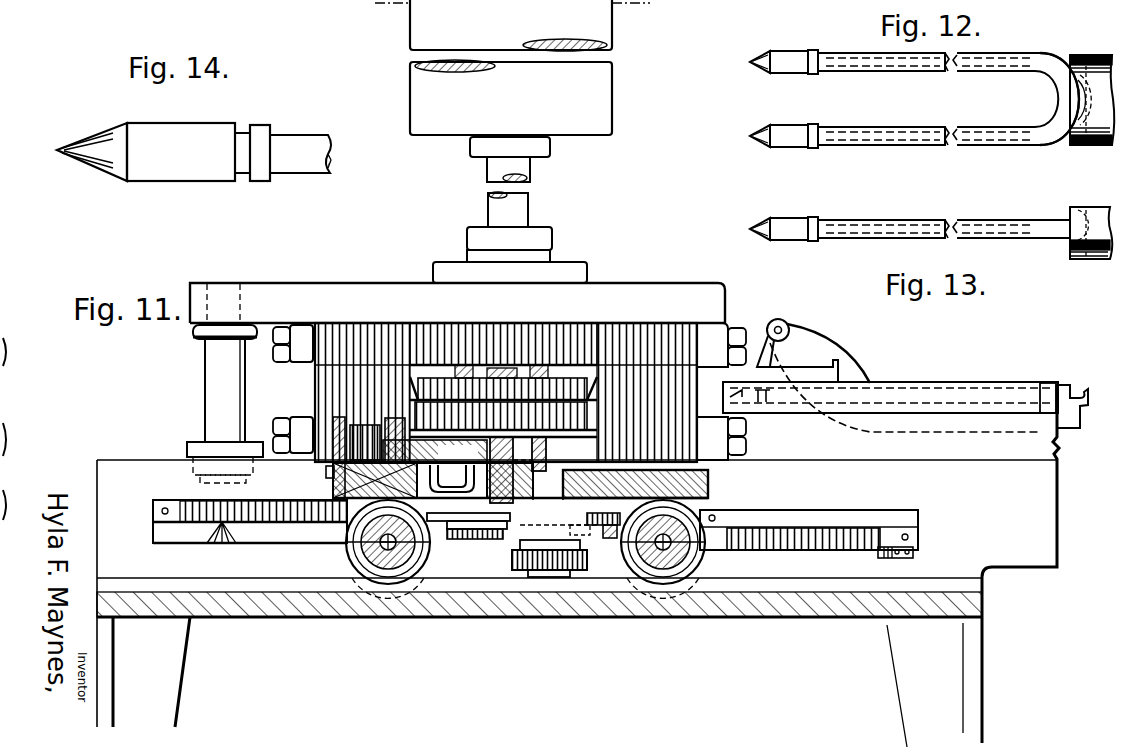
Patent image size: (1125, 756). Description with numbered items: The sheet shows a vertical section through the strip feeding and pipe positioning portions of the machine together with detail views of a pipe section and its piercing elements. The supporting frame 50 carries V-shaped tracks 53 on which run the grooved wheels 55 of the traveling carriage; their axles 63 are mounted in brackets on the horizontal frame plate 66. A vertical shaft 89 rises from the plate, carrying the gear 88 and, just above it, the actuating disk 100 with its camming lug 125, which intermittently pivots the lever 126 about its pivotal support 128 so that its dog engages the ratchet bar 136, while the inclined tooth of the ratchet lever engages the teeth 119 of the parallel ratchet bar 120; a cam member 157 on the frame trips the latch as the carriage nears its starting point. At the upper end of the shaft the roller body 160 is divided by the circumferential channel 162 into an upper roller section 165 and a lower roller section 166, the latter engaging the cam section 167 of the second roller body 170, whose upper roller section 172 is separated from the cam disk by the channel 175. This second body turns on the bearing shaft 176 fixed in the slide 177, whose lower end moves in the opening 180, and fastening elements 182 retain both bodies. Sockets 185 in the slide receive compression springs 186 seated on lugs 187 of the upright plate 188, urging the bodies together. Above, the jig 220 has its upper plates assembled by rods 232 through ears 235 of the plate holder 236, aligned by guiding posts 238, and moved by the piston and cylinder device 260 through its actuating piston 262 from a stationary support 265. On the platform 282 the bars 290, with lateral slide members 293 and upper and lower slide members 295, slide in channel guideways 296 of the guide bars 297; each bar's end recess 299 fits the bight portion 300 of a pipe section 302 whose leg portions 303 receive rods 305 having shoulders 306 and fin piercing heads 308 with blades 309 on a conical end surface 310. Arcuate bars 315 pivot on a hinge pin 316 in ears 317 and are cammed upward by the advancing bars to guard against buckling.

In FIG. 11, the supporting frame 50 is at (89, 469).
In FIG. 11, the rails or tracks 53 is at (128, 580).
In FIG. 11, the wheels or rollers 55 is at (370, 583).
In FIG. 11, the axles 63 is at (391, 550).
In FIG. 11, the frame plate 66 is at (712, 480).
In FIG. 11, the gear 88 is at (600, 560).
In FIG. 11, the shaft 89 is at (560, 545).
In FIG. 11, the cam or actuating disk 100 is at (530, 577).
In FIG. 11, the teeth 119 is at (733, 550).
In FIG. 11, the ratchet bar 120 is at (783, 550).
In FIG. 11, the camming lug or pin 125 is at (545, 570).
In FIG. 11, the lever 126 is at (438, 522).
In FIG. 11, the intermediate pivotal support 128 is at (467, 540).
In FIG. 11, the ratchet bar 136 is at (165, 500).
In FIG. 11, the cam member 157 is at (912, 560).
In FIG. 11, the roller body 160 is at (515, 388).
In FIG. 11, the circumferential channel 162 is at (597, 397).
In FIG. 11, the upper roller section 165 is at (583, 383).
In FIG. 11, the lower roller section 166 is at (593, 427).
In FIG. 11, the disk-like cam section 167 is at (410, 417).
In FIG. 11, the roller body 170 is at (493, 368).
In FIG. 11, the upper roller section 172 is at (433, 390).
In FIG. 11, the groove or channel 175 is at (407, 417).
In FIG. 11, the bearing shaft 176 is at (435, 451).
In FIG. 11, the slide 177 is at (345, 485).
In FIG. 11, the opening 180 is at (345, 525).
In FIG. 11, the fastening elements 182 is at (461, 366).
In FIG. 11, the sockets 185 is at (328, 470).
In FIG. 11, the compression springs 186 is at (358, 425).
In FIG. 11, the lugs 187 is at (358, 440).
In FIG. 11, the plate 188 is at (340, 437).
In FIG. 11, the jig 220 is at (376, 277).
In FIG. 11, the bolts or rods 232 is at (285, 330).
In FIG. 11, the ears 235 is at (305, 335).
In FIG. 11, the upper horizontal plate holder 236 is at (280, 292).
In FIG. 11, the guiding posts 238 is at (207, 383).
In FIG. 11, the piston and cylinder device 260 is at (622, 81).
In FIG. 11, the actuating piston 262 is at (518, 200).
In FIG. 11, the stationary support 265 is at (645, 4).
In FIG. 11, the supporting platform 282 is at (1060, 452).
In FIG. 12, the bars 290 is at (1102, 51).
In FIG. 13, the bars 290 is at (1068, 217).
In FIG. 12, the laterally projecting slide members 293 is at (1090, 146).
In FIG. 13, the laterally projecting slide members 293 is at (1094, 260).
In FIG. 12, the upper and lower slide members 295 is at (1076, 90).
In FIG. 13, the upper and lower slide members 295 is at (1080, 250).
In FIG. 11, the channel guideways 296 is at (983, 388).
In FIG. 11, the guide bars 297 is at (930, 382).
In FIG. 12, the recess 299 is at (1082, 78).
In FIG. 12, the bight portion 300 is at (1072, 108).
In FIG. 12, the pipe section 302 is at (1058, 145).
In FIG. 11, the pipe section 302 is at (1035, 390).
In FIG. 12, the leg portions 303 is at (905, 92).
In FIG. 14, the rods 305 is at (322, 145).
In FIG. 12, the rods 305 is at (957, 126).
In FIG. 13, the rods 305 is at (957, 221).
In FIG. 11, the rods 305 is at (1084, 392).
In FIG. 14, the shoulders 306 is at (272, 138).
In FIG. 12, the shoulders 306 is at (836, 92).
In FIG. 13, the shoulders 306 is at (815, 222).
In FIG. 14, the fin piercing heads 308 is at (178, 135).
In FIG. 12, the fin piercing heads 308 is at (796, 92).
In FIG. 13, the fin piercing heads 308 is at (791, 220).
In FIG. 11, the fin piercing heads 308 is at (737, 398).
In FIG. 14, the blades 309 is at (108, 140).
In FIG. 14, the pointed or conical end surface 310 is at (70, 147).
In FIG. 12, the pointed or conical end surface 310 is at (760, 92).
In FIG. 13, the pointed or conical end surface 310 is at (756, 219).
In FIG. 11, the arcuate bars 315 is at (826, 358).
In FIG. 11, the hinge pin 316 is at (780, 326).
In FIG. 11, the ears 317 is at (782, 356).